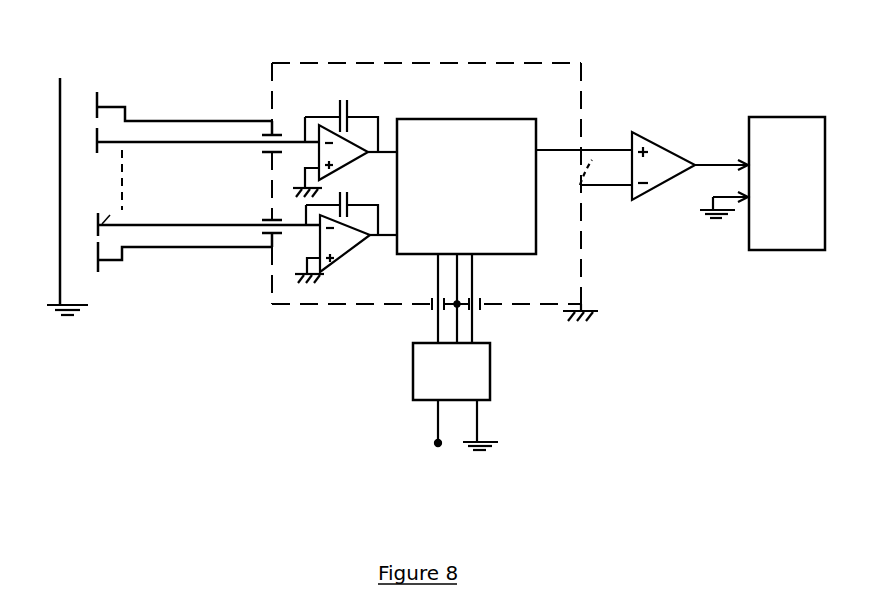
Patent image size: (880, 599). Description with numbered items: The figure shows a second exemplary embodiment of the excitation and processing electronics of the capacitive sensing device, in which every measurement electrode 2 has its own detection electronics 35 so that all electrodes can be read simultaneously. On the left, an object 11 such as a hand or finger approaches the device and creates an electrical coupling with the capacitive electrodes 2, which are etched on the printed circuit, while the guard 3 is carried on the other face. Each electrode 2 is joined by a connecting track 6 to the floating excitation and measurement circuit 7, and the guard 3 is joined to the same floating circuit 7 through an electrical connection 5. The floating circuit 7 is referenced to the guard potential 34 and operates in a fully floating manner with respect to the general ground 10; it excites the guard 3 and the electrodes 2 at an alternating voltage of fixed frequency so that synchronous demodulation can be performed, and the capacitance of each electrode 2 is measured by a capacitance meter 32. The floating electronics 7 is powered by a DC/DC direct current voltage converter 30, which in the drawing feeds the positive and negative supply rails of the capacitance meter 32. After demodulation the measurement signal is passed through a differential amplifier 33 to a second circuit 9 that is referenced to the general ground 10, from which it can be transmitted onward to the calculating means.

The measurement electrode 2 is at (97, 140).
The guard 3 is at (97, 107).
The electrical connection 5 is at (165, 121).
The connecting track 6 is at (190, 150).
The floating excitation and measurement circuit 7 is at (553, 90).
The second circuit 9 is at (760, 117).
The general ground 10 is at (65, 316).
The object 11 is at (62, 78).
The DC/DC direct current voltage converter 30 is at (413, 365).
The capacitance meter 32 is at (452, 118).
The differential amplifier 33 is at (640, 133).
The guard potential 34 is at (290, 303).
The detection electronics 35 is at (338, 110).